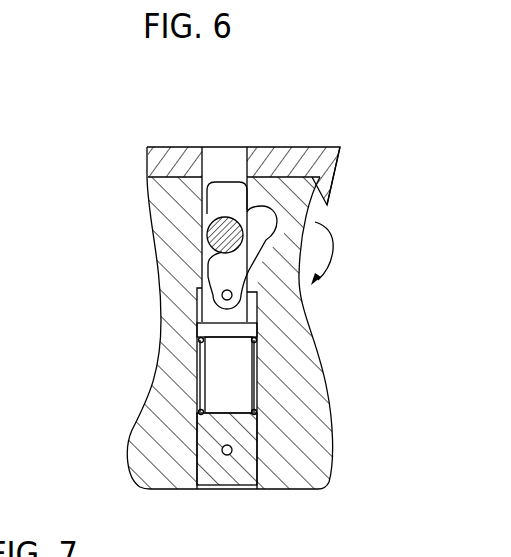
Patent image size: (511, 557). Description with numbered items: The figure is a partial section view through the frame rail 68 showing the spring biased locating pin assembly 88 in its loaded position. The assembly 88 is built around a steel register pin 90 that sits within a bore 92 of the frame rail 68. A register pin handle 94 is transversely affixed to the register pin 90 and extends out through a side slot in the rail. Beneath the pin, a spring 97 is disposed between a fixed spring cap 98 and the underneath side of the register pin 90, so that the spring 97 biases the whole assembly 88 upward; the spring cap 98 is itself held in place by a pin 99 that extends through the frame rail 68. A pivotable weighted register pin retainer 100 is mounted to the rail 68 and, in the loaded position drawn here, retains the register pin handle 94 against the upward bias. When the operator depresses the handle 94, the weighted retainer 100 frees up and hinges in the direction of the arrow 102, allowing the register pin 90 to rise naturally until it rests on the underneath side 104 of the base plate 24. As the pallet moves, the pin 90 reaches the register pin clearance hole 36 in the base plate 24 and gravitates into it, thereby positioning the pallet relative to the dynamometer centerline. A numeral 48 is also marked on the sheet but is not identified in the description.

In FIG. 6, the base plate 24 is at (297, 160).
In FIG. 6, the register pin clearance hole 36 is at (205, 147).
In FIG. 6, the frame rail 68 is at (152, 417).
In FIG. 6, the locating pin assembly 88 is at (120, 260).
In FIG. 6, the register pin 90 is at (218, 199).
In FIG. 6, the bore 92 is at (208, 257).
In FIG. 6, the register pin handle 94 is at (241, 236).
In FIG. 6, the spring 97 is at (253, 380).
In FIG. 6, the spring cap 98 is at (243, 448).
In FIG. 6, the pin 99 is at (231, 454).
In FIG. 6, the register pin retainer 100 is at (209, 287).
In FIG. 6, the arrow 102 is at (335, 249).
In FIG. 6, the underneath side 104 is at (327, 205).
In FIG. 7, the handle 48 is at (142, 556).